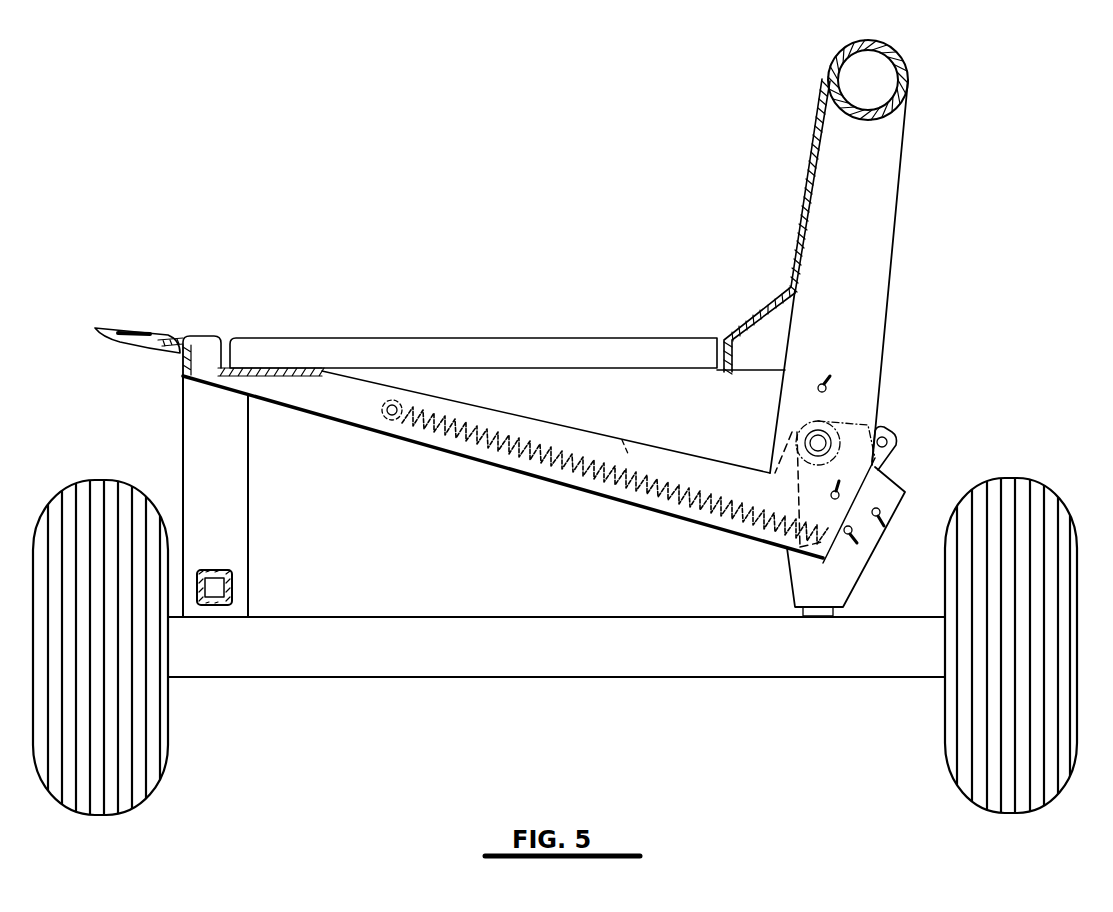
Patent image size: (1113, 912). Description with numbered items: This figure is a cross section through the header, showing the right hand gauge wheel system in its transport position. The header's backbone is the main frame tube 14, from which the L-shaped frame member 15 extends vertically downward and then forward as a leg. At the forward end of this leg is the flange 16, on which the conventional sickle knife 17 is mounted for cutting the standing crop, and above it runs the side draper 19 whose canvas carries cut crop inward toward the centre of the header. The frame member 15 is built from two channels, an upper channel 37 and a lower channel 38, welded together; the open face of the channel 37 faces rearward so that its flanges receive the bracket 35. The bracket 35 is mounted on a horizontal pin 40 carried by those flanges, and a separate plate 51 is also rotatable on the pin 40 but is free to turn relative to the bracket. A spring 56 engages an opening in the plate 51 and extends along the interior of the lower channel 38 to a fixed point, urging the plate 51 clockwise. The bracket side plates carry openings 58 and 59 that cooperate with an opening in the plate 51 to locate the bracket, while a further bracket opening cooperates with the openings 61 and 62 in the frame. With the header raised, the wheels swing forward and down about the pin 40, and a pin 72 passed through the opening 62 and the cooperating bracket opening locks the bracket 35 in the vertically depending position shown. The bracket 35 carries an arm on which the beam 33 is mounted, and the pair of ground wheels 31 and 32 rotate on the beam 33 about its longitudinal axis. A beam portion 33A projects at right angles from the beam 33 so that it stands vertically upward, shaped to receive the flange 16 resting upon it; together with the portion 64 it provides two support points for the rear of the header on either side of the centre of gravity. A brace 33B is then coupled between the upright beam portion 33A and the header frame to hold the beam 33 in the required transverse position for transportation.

The main frame tube 14 is at (905, 43).
The L-shaped frame member 15 is at (546, 490).
The flange 16 is at (172, 367).
The sickle knife 17 is at (102, 316).
The side draper 19 is at (424, 332).
The ground wheel 31 is at (935, 743).
The ground wheel 32 is at (180, 735).
The beam 33 is at (455, 678).
The beam portion 33A is at (230, 486).
The brace 33B is at (244, 585).
The bracket 35 is at (875, 574).
The channel 37 is at (878, 197).
The channel 38 is at (663, 515).
The pin 40 is at (805, 438).
The plate 51 is at (894, 422).
The spring 56 is at (622, 440).
The opening 58 is at (850, 546).
The opening 59 is at (888, 529).
The opening 61 is at (848, 380).
The opening 62 is at (843, 492).
The portion 64 is at (788, 608).
The pin 72 is at (777, 480).